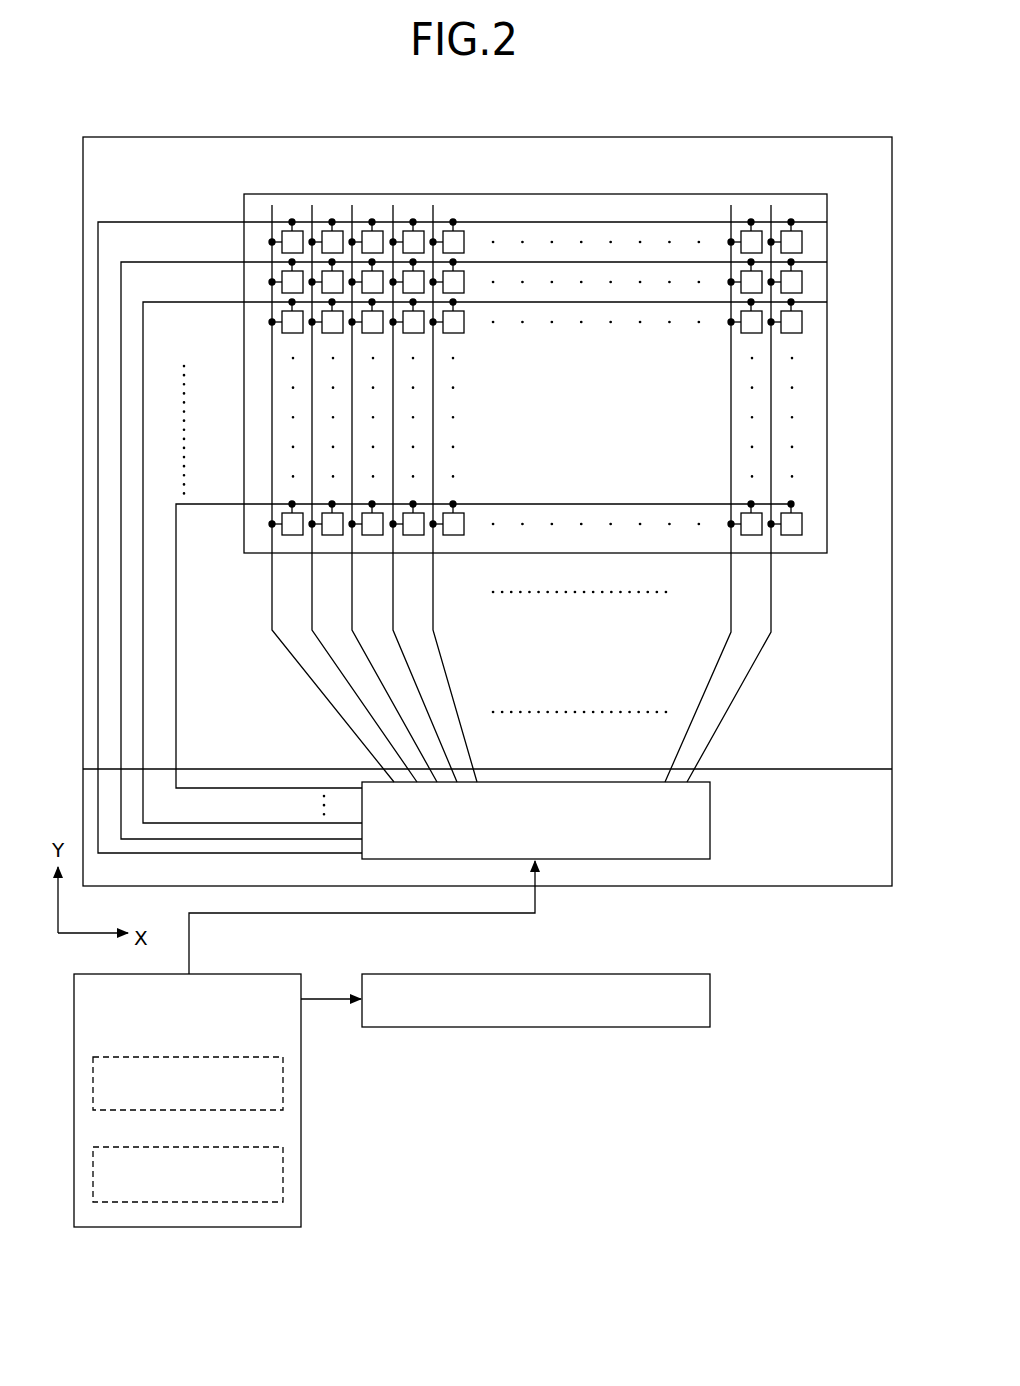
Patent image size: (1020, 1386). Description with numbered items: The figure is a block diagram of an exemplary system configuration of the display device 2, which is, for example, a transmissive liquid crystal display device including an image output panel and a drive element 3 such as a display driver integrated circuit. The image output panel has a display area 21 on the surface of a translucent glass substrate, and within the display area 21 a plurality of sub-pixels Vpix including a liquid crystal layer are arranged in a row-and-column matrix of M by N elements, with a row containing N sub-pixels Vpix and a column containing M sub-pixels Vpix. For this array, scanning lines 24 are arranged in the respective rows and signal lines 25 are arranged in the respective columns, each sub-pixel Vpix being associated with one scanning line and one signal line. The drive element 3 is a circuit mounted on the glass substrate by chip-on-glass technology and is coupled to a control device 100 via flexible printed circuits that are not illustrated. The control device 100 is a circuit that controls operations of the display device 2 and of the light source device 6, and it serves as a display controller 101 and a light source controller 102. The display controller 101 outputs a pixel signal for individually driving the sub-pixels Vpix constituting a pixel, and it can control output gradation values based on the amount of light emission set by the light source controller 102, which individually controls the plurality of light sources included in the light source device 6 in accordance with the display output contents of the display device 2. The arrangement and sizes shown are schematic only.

The display device 2 is at (521, 137).
The drive element 3 is at (711, 805).
The light source device 6 is at (711, 999).
The display area 21 is at (549, 396).
The scanning lines 24 is at (845, 495).
The signal lines 25 is at (795, 610).
The sub-pixel Vpix is at (463, 325).
The control device 100 is at (252, 974).
The display controller 101 is at (230, 1056).
The light source controller 102 is at (230, 1146).